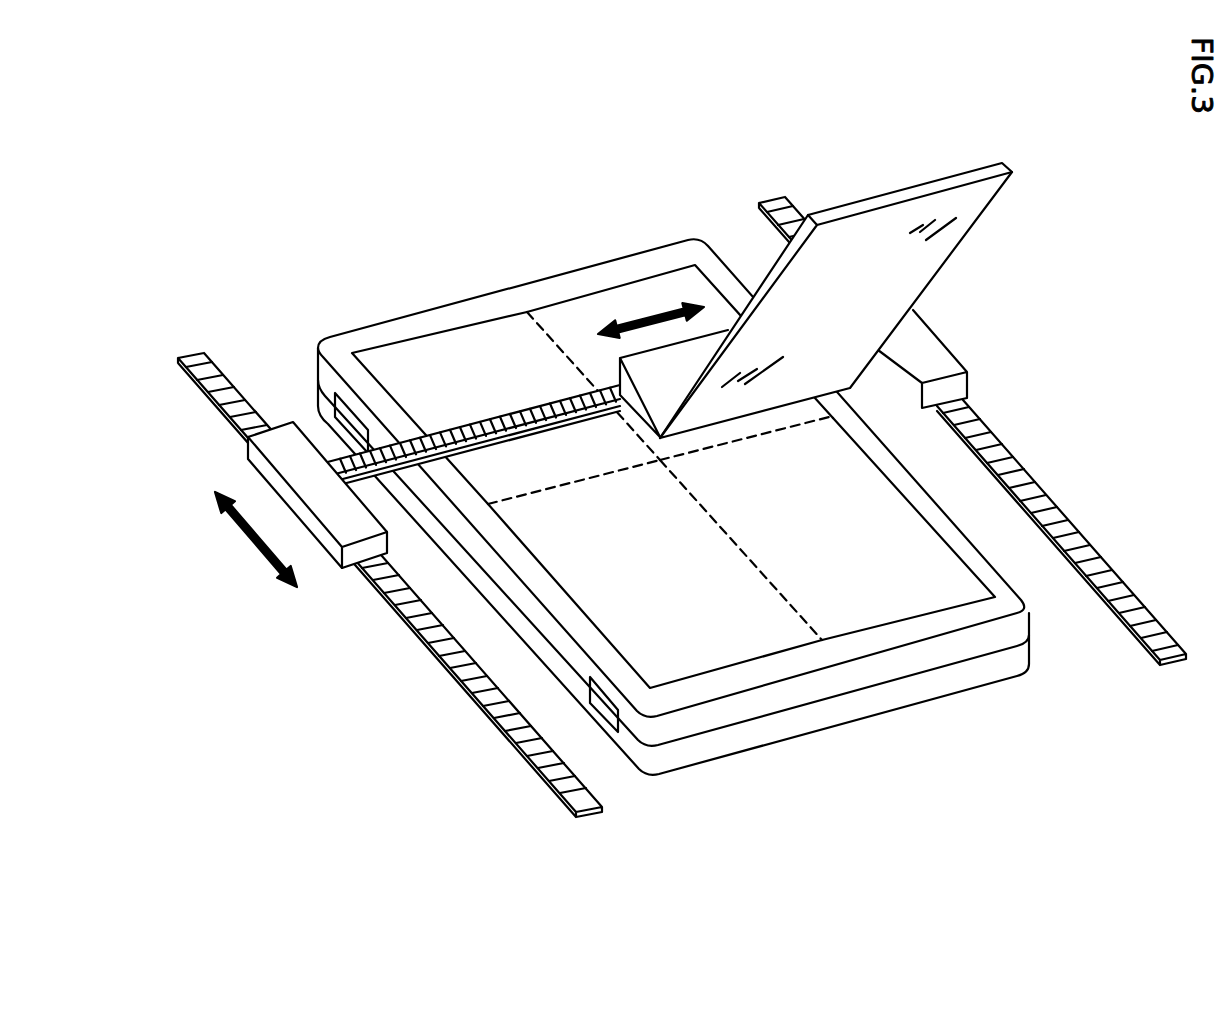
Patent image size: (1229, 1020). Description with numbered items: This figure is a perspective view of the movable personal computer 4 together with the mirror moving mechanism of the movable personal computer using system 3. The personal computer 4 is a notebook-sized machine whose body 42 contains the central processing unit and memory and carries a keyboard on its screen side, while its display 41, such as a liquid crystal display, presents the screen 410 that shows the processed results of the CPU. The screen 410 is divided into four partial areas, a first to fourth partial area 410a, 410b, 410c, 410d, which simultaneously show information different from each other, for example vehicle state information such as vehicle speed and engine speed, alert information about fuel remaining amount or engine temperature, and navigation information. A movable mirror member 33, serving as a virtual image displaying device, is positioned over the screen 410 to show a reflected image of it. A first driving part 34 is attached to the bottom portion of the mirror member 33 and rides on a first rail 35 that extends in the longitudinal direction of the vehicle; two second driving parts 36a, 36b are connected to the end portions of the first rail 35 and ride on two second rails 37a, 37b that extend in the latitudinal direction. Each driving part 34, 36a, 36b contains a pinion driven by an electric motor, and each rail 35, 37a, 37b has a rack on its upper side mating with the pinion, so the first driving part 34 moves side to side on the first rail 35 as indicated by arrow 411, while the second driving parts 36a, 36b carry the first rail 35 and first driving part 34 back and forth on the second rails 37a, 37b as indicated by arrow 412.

The movable personal computer using system 3 is at (238, 204).
The movable personal computer 4 is at (872, 740).
The display 41 is at (888, 665).
The body 42 is at (990, 677).
The screen 410 is at (767, 667).
The first partial area 410a is at (900, 605).
The second partial area 410b is at (683, 647).
The third partial area 410c is at (683, 278).
The fourth partial area 410d is at (497, 348).
The movable mirror member 33 is at (885, 220).
The first driving part 34 is at (600, 345).
The first rail 35 is at (480, 428).
The second driving part 36a is at (273, 447).
The second driving part 36b is at (943, 360).
The second rail 37a is at (440, 653).
The second rail 37b is at (1010, 468).
The arrow 411 is at (653, 313).
The arrow 412 is at (250, 543).